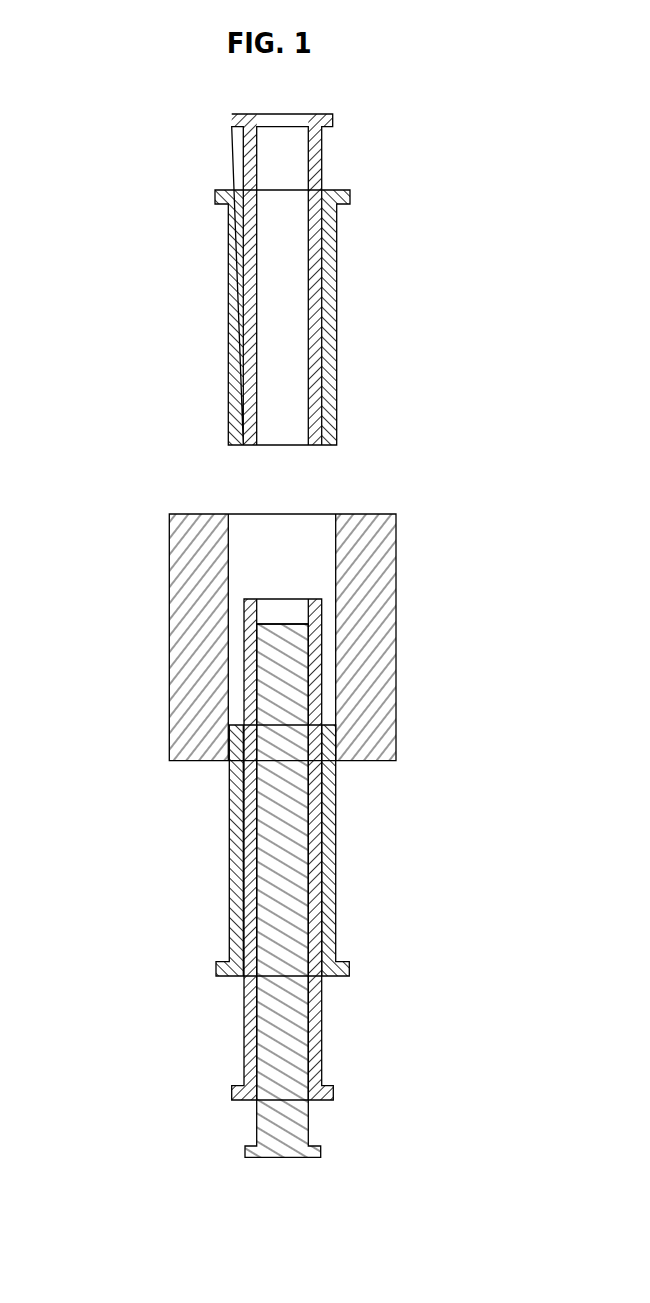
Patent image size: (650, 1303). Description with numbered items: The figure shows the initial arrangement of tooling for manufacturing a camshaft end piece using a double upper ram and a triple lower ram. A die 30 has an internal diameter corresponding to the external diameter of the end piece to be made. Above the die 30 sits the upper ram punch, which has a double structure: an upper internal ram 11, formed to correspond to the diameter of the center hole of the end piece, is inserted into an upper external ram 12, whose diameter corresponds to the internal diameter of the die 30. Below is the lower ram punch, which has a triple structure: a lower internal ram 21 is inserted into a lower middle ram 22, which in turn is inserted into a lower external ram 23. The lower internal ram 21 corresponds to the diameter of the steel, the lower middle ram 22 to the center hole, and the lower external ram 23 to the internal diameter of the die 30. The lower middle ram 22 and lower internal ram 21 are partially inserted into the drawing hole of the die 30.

The upper internal ram 11 is at (248, 163).
The upper external ram 12 is at (332, 372).
The lower internal ram 21 is at (273, 663).
The lower middle ram 22 is at (315, 617).
The lower external ram 23 is at (328, 897).
The die 30 is at (183, 711).